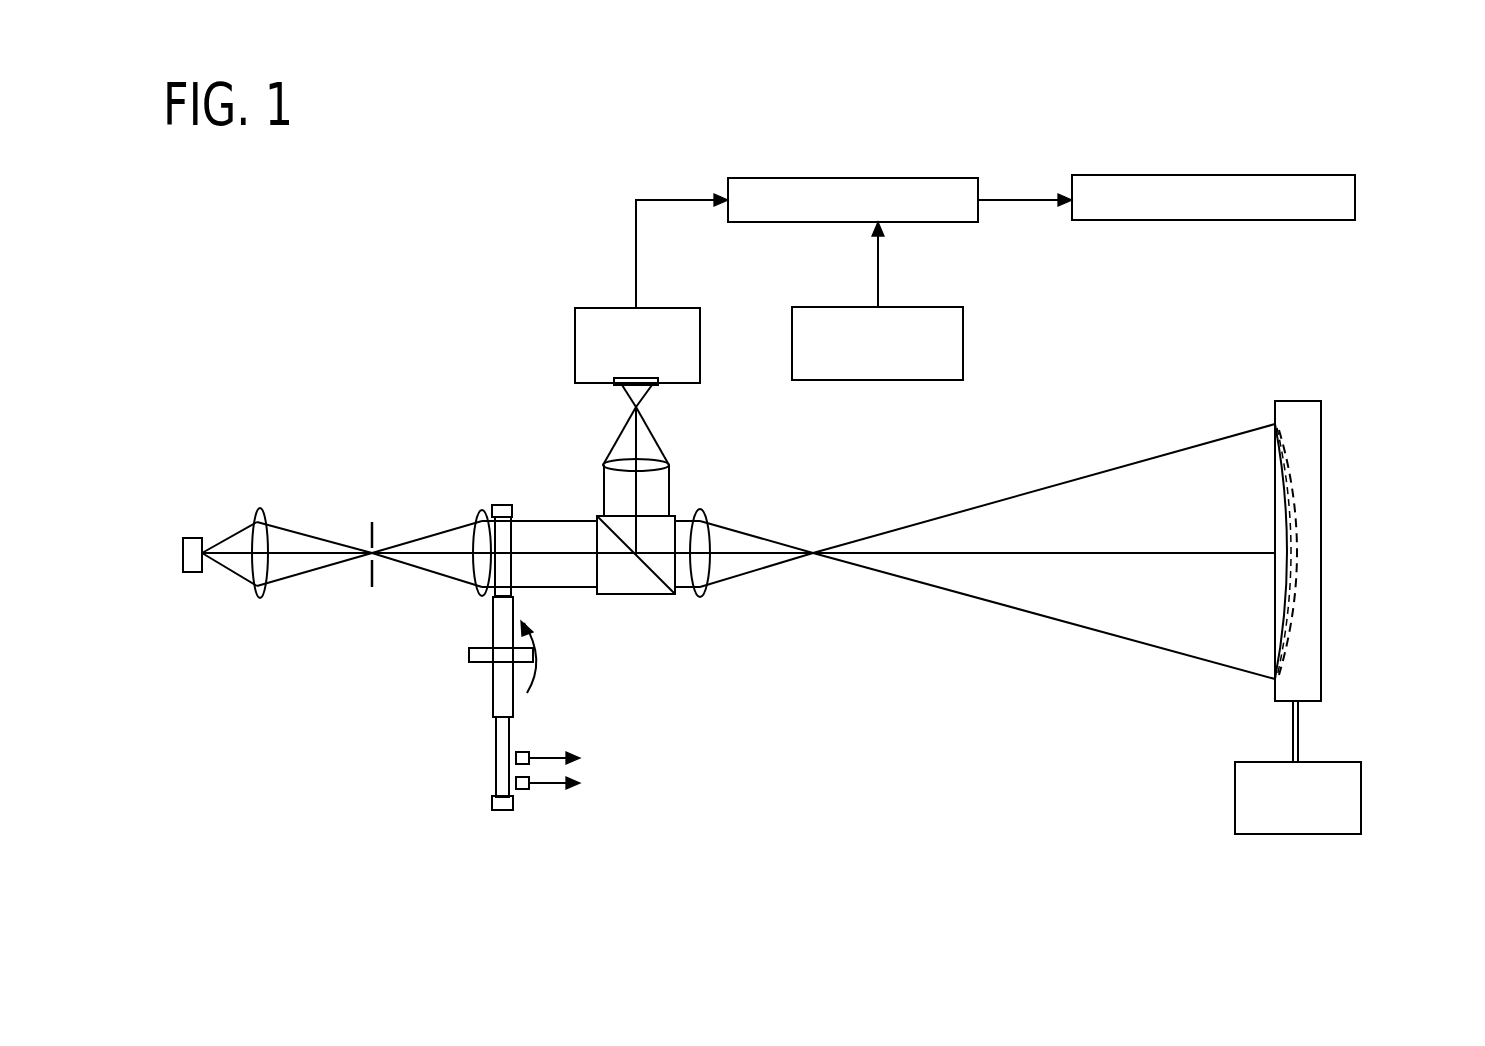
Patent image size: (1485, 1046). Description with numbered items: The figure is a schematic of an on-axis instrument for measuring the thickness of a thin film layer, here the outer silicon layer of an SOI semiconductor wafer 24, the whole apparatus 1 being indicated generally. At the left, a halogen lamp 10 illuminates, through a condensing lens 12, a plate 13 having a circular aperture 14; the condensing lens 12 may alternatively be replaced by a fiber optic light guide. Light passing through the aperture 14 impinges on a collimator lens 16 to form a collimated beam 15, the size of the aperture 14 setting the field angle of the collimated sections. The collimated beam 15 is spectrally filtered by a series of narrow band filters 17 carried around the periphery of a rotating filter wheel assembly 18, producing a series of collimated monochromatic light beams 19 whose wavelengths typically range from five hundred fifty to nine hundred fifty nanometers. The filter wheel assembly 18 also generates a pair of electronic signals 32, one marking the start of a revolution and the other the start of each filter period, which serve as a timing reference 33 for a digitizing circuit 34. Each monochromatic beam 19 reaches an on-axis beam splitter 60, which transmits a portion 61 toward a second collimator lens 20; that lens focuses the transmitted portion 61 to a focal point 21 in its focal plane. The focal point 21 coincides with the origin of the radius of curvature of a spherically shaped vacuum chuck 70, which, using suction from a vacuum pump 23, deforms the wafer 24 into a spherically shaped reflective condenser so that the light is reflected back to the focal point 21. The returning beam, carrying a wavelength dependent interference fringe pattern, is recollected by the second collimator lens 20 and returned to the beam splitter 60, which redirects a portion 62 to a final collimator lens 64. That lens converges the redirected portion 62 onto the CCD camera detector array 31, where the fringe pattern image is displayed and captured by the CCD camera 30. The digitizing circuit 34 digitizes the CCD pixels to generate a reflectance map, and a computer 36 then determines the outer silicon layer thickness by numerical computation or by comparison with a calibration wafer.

The apparatus 1 is at (450, 432).
The halogen lamp 10 is at (193, 572).
The condensing lens 12 is at (257, 517).
The plate 13 is at (370, 528).
The circular aperture 14 is at (368, 565).
The collimated beam 15 is at (490, 597).
The collimator lens 16 is at (478, 520).
The narrow band filters 17 is at (505, 567).
The rotating filter wheel assembly 18 is at (503, 680).
The collimated monochromatic light beams 19 is at (560, 532).
The second collimator lens 20 is at (703, 593).
The focal point 21 is at (813, 550).
The vacuum pump 23 is at (1328, 762).
The SOI semiconductor wafer 24 is at (1293, 507).
The CCD camera 30 is at (662, 308).
The CCD camera detector array 31 is at (655, 386).
The electronic signals 32 is at (542, 757).
The timing reference 33 is at (910, 307).
The digitizing circuit 34 is at (920, 178).
The computer 36 is at (1287, 175).
The on-axis beam splitter 60 is at (623, 572).
The transmitted portion 61 is at (683, 575).
The redirected portion 62 is at (615, 495).
The final collimator lens 64 is at (673, 462).
The spherically shaped vacuum chuck 70 is at (1293, 409).